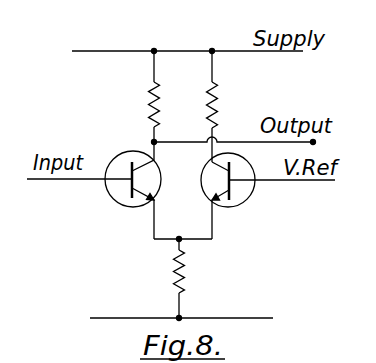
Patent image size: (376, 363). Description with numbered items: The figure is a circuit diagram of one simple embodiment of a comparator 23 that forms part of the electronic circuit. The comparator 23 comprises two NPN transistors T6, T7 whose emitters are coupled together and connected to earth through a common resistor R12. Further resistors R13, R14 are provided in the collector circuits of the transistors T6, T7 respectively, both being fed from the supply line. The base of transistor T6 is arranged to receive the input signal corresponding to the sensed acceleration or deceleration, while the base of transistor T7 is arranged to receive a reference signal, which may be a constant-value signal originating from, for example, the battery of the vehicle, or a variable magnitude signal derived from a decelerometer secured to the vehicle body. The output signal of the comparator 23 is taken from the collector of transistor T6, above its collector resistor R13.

The resistor R13 is at (150, 98).
The resistor R14 is at (218, 94).
The resistor R12 is at (201, 278).
The NPN transistor T6 is at (113, 162).
The NPN transistor T7 is at (247, 198).
The comparator 23 is at (258, 233).